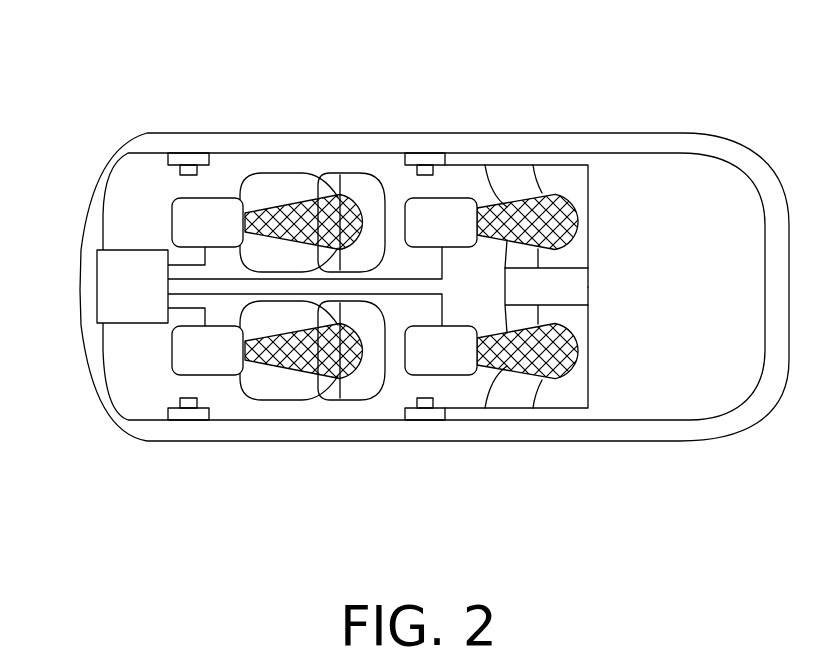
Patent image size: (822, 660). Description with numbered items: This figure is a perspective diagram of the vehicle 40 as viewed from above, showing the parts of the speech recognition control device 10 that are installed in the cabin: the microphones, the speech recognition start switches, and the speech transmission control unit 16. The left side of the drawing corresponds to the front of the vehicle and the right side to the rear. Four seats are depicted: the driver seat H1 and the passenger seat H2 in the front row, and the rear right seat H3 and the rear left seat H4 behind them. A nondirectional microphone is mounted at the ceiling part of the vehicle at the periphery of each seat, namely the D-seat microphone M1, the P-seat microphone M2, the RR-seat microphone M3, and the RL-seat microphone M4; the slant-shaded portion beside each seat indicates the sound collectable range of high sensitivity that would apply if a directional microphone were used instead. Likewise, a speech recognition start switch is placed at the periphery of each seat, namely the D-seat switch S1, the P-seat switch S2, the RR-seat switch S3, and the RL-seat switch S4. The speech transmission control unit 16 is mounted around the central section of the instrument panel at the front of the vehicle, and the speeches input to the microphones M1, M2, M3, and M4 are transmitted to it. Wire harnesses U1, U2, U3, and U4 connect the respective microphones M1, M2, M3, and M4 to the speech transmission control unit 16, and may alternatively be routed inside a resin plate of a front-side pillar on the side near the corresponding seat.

The vehicle 40 is at (632, 98).
The speech recognition control device 10 is at (123, 250).
The speech transmission control unit 16 is at (120, 293).
The wire harness U1 is at (175, 264).
The wire harness U2 is at (175, 308).
The wire harness U3 is at (430, 279).
The wire harness U4 is at (447, 310).
The driver seat H1 is at (357, 183).
The passenger seat H2 is at (300, 387).
The rear right seat H3 is at (568, 183).
The rear left seat H4 is at (568, 393).
The D-seat microphone M1 is at (222, 212).
The P-seat microphone M2 is at (222, 362).
The RR-seat microphone M3 is at (415, 210).
The RL-seat microphone M4 is at (415, 362).
The D-seat speech recognition start switch S1 is at (190, 160).
The P-seat speech recognition start switch S2 is at (190, 413).
The RR-seat speech recognition start switch S3 is at (427, 163).
The RL-seat speech recognition start switch S4 is at (427, 413).